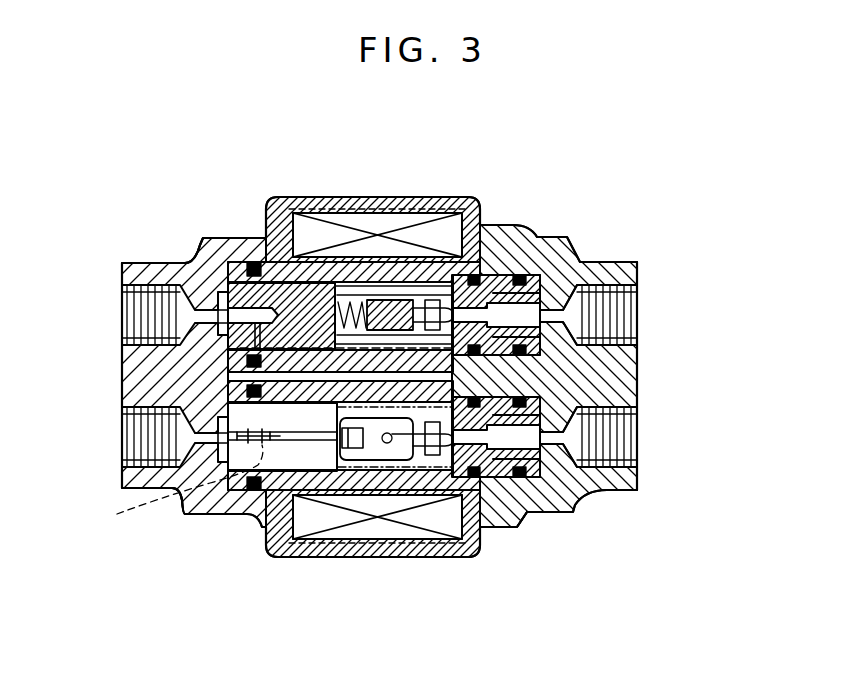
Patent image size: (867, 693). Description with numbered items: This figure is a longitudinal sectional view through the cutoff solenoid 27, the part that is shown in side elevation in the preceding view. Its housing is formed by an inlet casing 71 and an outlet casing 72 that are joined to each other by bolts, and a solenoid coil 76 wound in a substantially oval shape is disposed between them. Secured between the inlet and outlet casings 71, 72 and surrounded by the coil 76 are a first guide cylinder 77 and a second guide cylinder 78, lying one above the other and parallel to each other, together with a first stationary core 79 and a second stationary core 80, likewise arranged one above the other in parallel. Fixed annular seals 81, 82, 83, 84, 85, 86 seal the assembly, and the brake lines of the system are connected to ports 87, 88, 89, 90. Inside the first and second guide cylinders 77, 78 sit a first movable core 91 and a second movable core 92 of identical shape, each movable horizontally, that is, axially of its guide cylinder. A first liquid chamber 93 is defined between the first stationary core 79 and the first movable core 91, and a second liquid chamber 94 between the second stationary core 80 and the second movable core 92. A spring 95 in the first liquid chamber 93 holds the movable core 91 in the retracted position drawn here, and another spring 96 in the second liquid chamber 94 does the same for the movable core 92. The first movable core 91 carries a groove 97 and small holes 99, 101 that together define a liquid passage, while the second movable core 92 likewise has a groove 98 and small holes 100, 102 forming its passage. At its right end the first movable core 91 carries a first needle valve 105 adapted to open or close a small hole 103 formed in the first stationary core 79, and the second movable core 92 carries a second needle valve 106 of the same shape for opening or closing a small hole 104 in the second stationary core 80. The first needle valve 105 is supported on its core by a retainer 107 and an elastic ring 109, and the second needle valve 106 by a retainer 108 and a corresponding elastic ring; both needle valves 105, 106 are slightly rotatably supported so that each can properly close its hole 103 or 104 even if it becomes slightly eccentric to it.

The cutoff solenoid 27 is at (598, 512).
The inlet casing 71 is at (627, 373).
The outlet casing 72 is at (148, 270).
The solenoid coil 76 is at (316, 472).
The first guide cylinder 77 is at (268, 205).
The second guide cylinder 78 is at (252, 530).
The first stationary core 79 is at (628, 265).
The second stationary core 80 is at (605, 498).
The fixed annular seal 81 is at (532, 290).
The fixed annular seal 82 is at (478, 276).
The fixed annular seal 83 is at (250, 265).
The fixed annular seal 84 is at (525, 517).
The fixed annular seal 85 is at (480, 495).
The fixed annular seal 86 is at (242, 492).
The port 87 is at (628, 330).
The port 88 is at (630, 447).
The port 89 is at (150, 304).
The port 90 is at (212, 455).
The first movable core 91 is at (275, 262).
The second movable core 92 is at (268, 545).
The first liquid chamber 93 is at (432, 295).
The second liquid chamber 94 is at (395, 470).
The spring 95 is at (320, 283).
The spring 96 is at (470, 475).
The groove 97 is at (255, 348).
The groove 98 is at (240, 434).
The small hole 99 is at (192, 262).
The small hole 100 is at (165, 491).
The small hole 101 is at (218, 322).
The small hole 102 is at (230, 480).
The small hole 103 is at (505, 275).
The small hole 104 is at (515, 500).
The first needle valve 105 is at (448, 300).
The second needle valve 106 is at (446, 470).
The retainer 107 is at (350, 290).
The retainer 108 is at (355, 462).
The elastic ring 109 is at (400, 298).